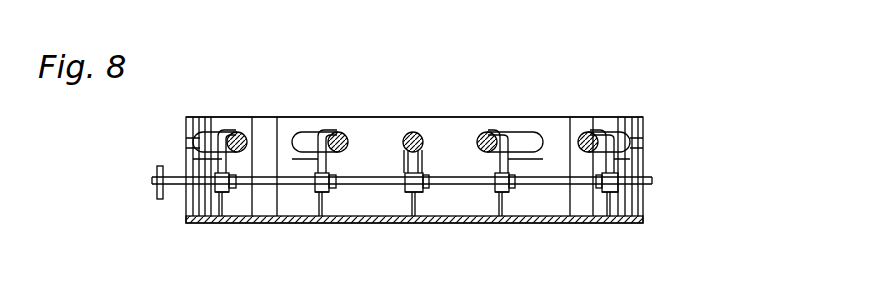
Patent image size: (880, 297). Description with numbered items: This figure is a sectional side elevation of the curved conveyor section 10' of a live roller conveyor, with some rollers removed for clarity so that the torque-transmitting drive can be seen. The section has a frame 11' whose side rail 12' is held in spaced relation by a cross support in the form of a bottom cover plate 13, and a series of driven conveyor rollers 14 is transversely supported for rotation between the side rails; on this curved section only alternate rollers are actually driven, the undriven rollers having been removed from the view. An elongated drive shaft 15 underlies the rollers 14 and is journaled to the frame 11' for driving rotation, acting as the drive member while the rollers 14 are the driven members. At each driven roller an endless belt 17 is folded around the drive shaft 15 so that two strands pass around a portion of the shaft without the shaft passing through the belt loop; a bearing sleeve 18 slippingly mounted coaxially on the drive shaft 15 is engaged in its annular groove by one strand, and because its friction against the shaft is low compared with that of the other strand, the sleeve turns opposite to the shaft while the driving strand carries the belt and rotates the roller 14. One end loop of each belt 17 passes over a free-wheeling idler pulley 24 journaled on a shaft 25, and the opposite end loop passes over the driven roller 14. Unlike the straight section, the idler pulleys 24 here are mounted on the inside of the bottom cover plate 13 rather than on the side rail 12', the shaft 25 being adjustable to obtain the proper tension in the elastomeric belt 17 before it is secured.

The curved conveyor section 10' is at (414, 143).
The frame 11' is at (414, 141).
The side rail 12' is at (414, 92).
The bottom cover plate 13 is at (357, 227).
The driven conveyor rollers 14 is at (302, 132).
The drive shaft 15 is at (445, 185).
The endless belt 17 is at (196, 162).
The bearing sleeve 18 is at (316, 178).
The free-wheeling idler pulley 24 is at (213, 191).
The shaft 25 is at (320, 217).